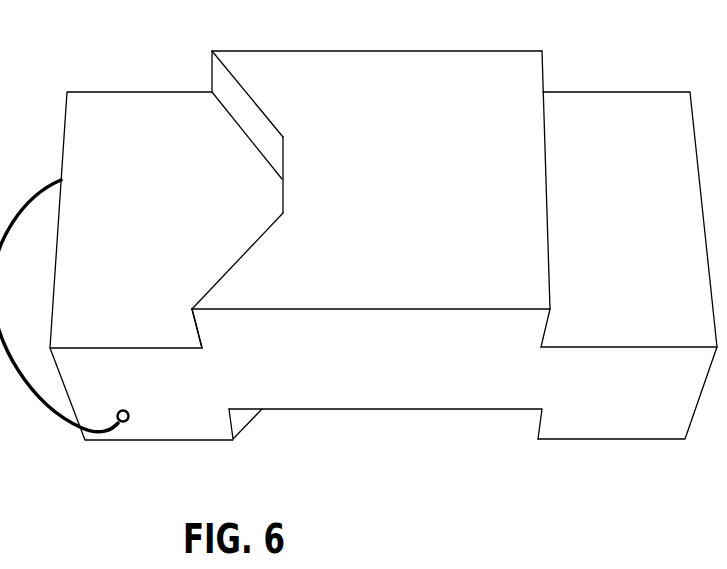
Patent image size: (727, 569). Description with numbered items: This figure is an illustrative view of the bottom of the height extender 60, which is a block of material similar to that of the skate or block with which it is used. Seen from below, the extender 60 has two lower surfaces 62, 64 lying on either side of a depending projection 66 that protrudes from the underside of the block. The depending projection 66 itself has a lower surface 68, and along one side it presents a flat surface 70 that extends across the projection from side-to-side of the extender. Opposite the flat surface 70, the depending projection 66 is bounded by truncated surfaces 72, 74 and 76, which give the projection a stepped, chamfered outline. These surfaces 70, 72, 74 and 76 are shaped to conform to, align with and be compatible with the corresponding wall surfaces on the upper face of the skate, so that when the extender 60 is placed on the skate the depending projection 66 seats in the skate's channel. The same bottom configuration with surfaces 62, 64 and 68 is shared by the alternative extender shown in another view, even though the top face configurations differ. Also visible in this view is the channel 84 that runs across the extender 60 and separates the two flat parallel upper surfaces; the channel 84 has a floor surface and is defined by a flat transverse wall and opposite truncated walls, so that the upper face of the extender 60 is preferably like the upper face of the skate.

The height extender 60 is at (646, 78).
The lower surface 62 is at (655, 247).
The lower surface 64 is at (142, 230).
The depending projection 66 is at (487, 344).
The lower surface 68 is at (455, 225).
The flat surface 70 is at (545, 80).
The truncated surface 72 is at (222, 80).
The truncated surface 74 is at (282, 194).
The truncated surface 76 is at (220, 278).
The channel 84 is at (533, 445).